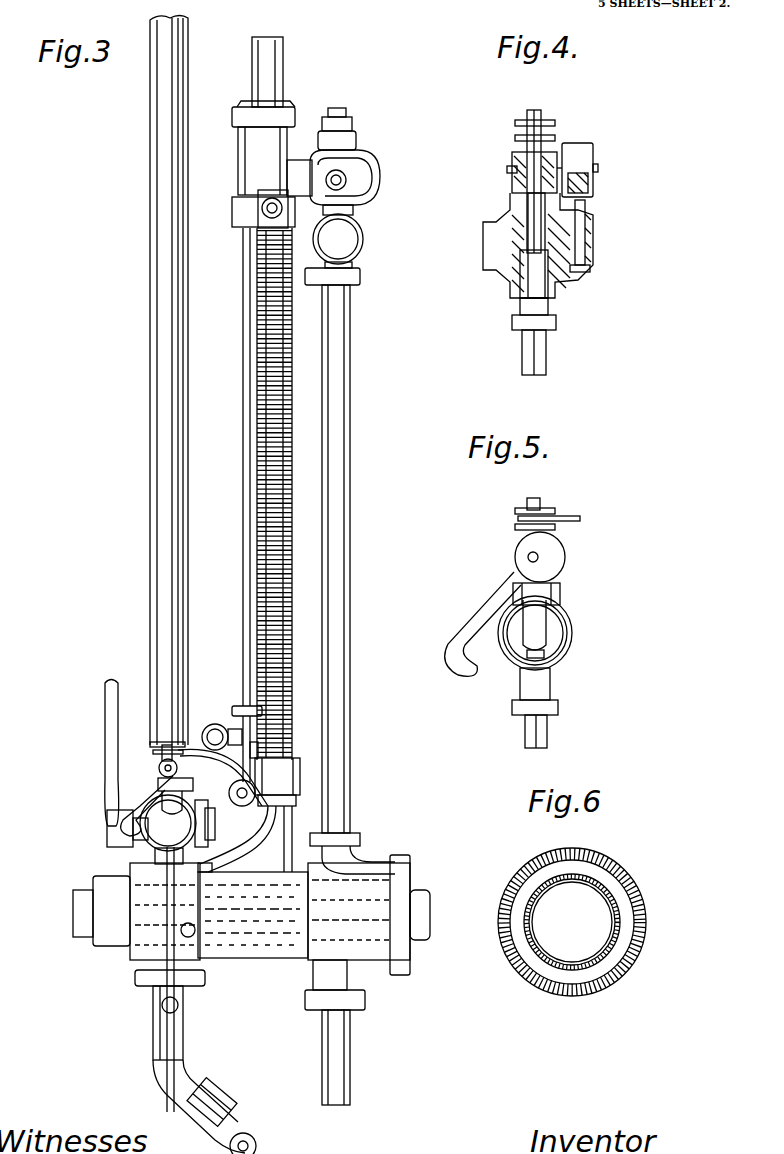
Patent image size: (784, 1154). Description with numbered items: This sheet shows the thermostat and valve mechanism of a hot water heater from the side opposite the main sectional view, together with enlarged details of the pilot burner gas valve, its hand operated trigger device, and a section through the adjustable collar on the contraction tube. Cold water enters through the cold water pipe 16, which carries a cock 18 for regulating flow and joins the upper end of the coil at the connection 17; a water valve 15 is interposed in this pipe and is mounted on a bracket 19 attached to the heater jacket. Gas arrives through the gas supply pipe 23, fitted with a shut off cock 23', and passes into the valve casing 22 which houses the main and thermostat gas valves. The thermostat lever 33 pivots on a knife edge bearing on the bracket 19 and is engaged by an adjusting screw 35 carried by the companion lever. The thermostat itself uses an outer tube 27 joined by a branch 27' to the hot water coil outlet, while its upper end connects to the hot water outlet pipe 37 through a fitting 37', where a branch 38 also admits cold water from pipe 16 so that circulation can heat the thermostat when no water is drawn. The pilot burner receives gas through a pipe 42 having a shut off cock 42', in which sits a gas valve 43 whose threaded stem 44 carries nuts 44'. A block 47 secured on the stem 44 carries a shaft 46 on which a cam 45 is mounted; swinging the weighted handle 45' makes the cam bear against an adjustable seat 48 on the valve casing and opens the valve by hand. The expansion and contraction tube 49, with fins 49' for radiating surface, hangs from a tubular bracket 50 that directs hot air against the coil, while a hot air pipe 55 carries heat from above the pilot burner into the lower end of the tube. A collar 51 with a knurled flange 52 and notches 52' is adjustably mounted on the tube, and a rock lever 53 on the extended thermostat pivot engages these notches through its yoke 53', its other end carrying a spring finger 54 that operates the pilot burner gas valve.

In FIG. 3, the water valve 15 is at (369, 915).
In FIG. 3, the cold water pipe 16 is at (351, 556).
In FIG. 3, the connection to coil 17 is at (344, 178).
In FIG. 3, the cock 18 is at (361, 237).
In FIG. 3, the bracket 19 is at (270, 952).
In FIG. 3, the valve casing 22 is at (139, 924).
In FIG. 3, the gas supply pipe 23 is at (176, 585).
In FIG. 3, the shut off cock 23' is at (110, 828).
In FIG. 3, the outer tube 27 is at (230, 472).
In FIG. 3, the branch 27' is at (223, 742).
In FIG. 3, the thermostat lever 33 is at (238, 806).
In FIG. 3, the adjusting screw 35 is at (361, 838).
In FIG. 3, the hot water outlet pipe 37 is at (283, 72).
In FIG. 3, the fitting 37' is at (246, 148).
In FIG. 3, the branch 38 is at (299, 162).
In FIG. 3, the pipe 42 is at (150, 979).
In FIG. 4, the pipe 42 is at (546, 336).
In FIG. 5, the pipe 42 is at (548, 708).
In FIG. 3, the shut off cock 42' is at (193, 1008).
In FIG. 3, the gas valve 43 is at (177, 823).
In FIG. 4, the gas valve 43 is at (561, 268).
In FIG. 5, the gas valve 43 is at (566, 650).
In FIG. 3, the stem 44 is at (164, 730).
In FIG. 4, the stem 44 is at (546, 169).
In FIG. 5, the stem 44 is at (544, 488).
In FIG. 3, the nuts 44' is at (150, 731).
In FIG. 4, the nuts 44' is at (552, 123).
In FIG. 5, the nuts 44' is at (530, 510).
In FIG. 3, the cam 45 is at (146, 769).
In FIG. 4, the cam 45 is at (596, 167).
In FIG. 5, the cam 45 is at (556, 557).
In FIG. 3, the weighted handle 45' is at (122, 758).
In FIG. 4, the weighted handle 45' is at (602, 185).
In FIG. 5, the weighted handle 45' is at (463, 624).
In FIG. 3, the shaft 46 is at (165, 766).
In FIG. 4, the shaft 46 is at (599, 169).
In FIG. 5, the shaft 46 is at (538, 556).
In FIG. 4, the block 47 is at (512, 160).
In FIG. 3, the adjustable seat 48 is at (195, 778).
In FIG. 4, the adjustable seat 48 is at (590, 205).
In FIG. 5, the adjustable seat 48 is at (560, 590).
In FIG. 3, the expansion and contraction tube 49 is at (242, 494).
In FIG. 6, the expansion and contraction tube 49 is at (608, 922).
In FIG. 3, the fins 49' is at (327, 494).
In FIG. 3, the tubular bracket 50 is at (262, 208).
In FIG. 6, the collar 51 is at (630, 922).
In FIG. 3, the knurled flange 52 is at (291, 838).
In FIG. 6, the knurled flange 52 is at (595, 922).
In FIG. 3, the notches 52' is at (351, 834).
In FIG. 6, the notches 52' is at (646, 862).
In FIG. 3, the rock lever 53 is at (286, 765).
In FIG. 3, the yoke 53' is at (324, 796).
In FIG. 3, the spring finger 54 is at (209, 731).
In FIG. 3, the hot air pipe 55 is at (196, 928).